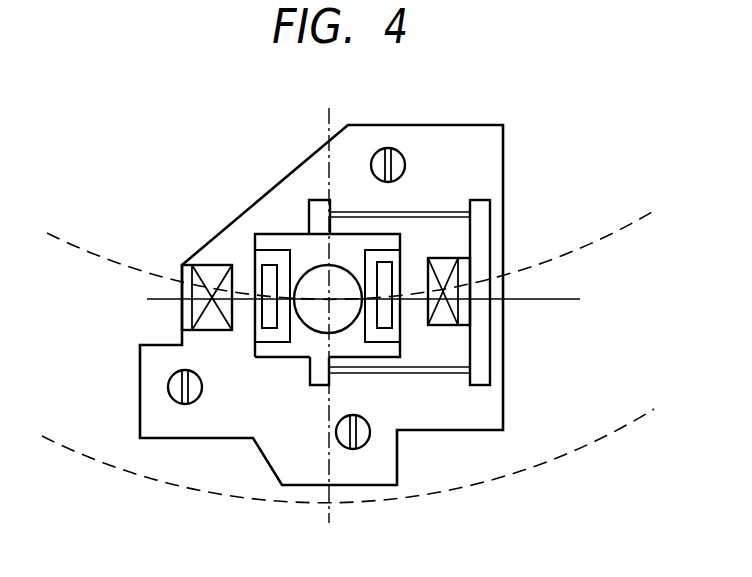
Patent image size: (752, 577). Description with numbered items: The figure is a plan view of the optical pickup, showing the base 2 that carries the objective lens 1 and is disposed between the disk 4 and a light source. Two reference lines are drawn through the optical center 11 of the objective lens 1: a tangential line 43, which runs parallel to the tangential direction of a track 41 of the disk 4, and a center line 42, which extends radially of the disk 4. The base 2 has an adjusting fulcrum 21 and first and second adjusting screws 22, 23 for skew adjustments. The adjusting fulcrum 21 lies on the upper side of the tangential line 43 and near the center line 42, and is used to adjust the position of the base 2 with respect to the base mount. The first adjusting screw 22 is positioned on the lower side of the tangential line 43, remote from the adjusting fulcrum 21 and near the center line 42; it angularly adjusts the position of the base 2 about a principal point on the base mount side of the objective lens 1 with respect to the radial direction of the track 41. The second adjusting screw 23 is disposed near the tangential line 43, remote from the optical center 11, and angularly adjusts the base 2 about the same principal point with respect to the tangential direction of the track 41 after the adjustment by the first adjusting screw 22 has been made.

The objective lens 1 is at (328, 299).
The optical center 11 is at (304, 277).
The base 2 is at (492, 347).
The adjusting fulcrum 21 is at (383, 149).
The first adjusting screw 22 is at (370, 436).
The second adjusting screw 23 is at (168, 387).
The disk 4 is at (558, 462).
The track 41 is at (613, 233).
The center line 42 is at (330, 494).
The tangential line 43 is at (560, 299).